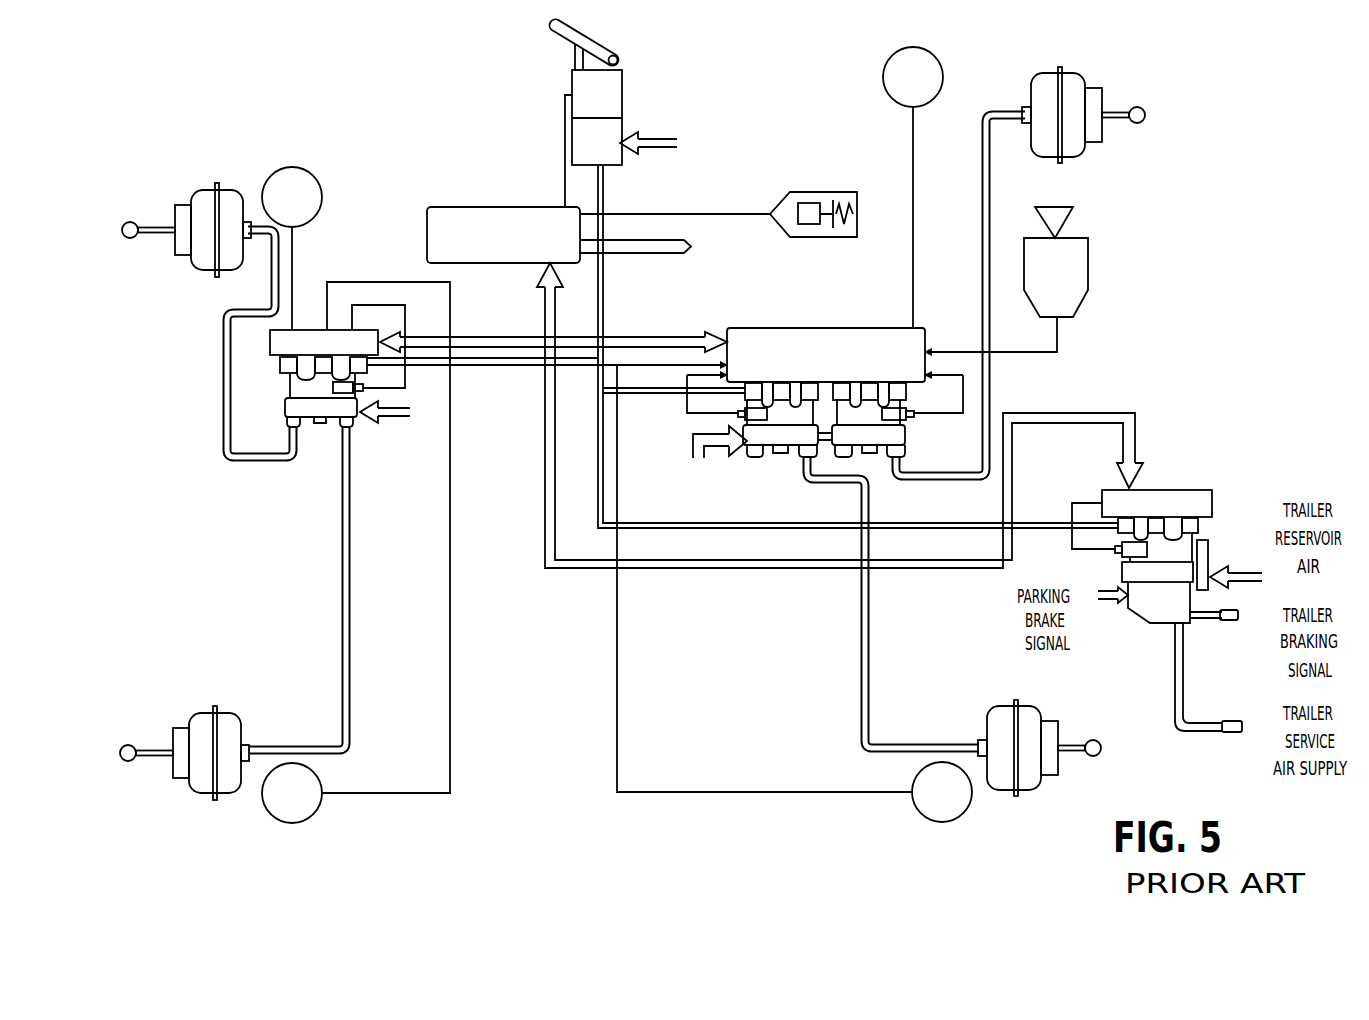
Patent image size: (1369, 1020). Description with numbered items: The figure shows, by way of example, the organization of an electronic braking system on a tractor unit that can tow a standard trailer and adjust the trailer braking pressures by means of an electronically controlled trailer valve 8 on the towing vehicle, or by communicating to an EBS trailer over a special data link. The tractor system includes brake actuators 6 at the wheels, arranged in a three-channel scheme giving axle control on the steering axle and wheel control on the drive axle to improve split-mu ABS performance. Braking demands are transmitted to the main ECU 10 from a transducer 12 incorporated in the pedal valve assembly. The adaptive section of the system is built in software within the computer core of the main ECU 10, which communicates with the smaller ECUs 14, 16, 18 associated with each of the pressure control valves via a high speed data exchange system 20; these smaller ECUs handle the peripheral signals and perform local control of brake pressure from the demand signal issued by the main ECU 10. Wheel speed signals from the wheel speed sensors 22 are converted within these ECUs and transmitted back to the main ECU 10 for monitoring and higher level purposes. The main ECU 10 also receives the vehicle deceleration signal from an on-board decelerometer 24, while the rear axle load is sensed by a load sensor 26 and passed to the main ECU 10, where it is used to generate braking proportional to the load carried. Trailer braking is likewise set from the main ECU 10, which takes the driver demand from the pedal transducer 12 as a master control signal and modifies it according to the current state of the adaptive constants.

The brake actuator 6 is at (210, 262).
The electronically controlled trailer valve 8 is at (1155, 631).
The main ECU 10 is at (505, 207).
The transducer 12 is at (622, 82).
The smaller ECU 14 is at (1212, 505).
The smaller ECU 16 is at (312, 330).
The smaller ECU 18 is at (840, 328).
The high speed data exchange system 20 is at (545, 508).
The wheel speed sensor 22 is at (315, 215).
The decelerometer 24 is at (845, 237).
The load sensor 26 is at (1075, 300).